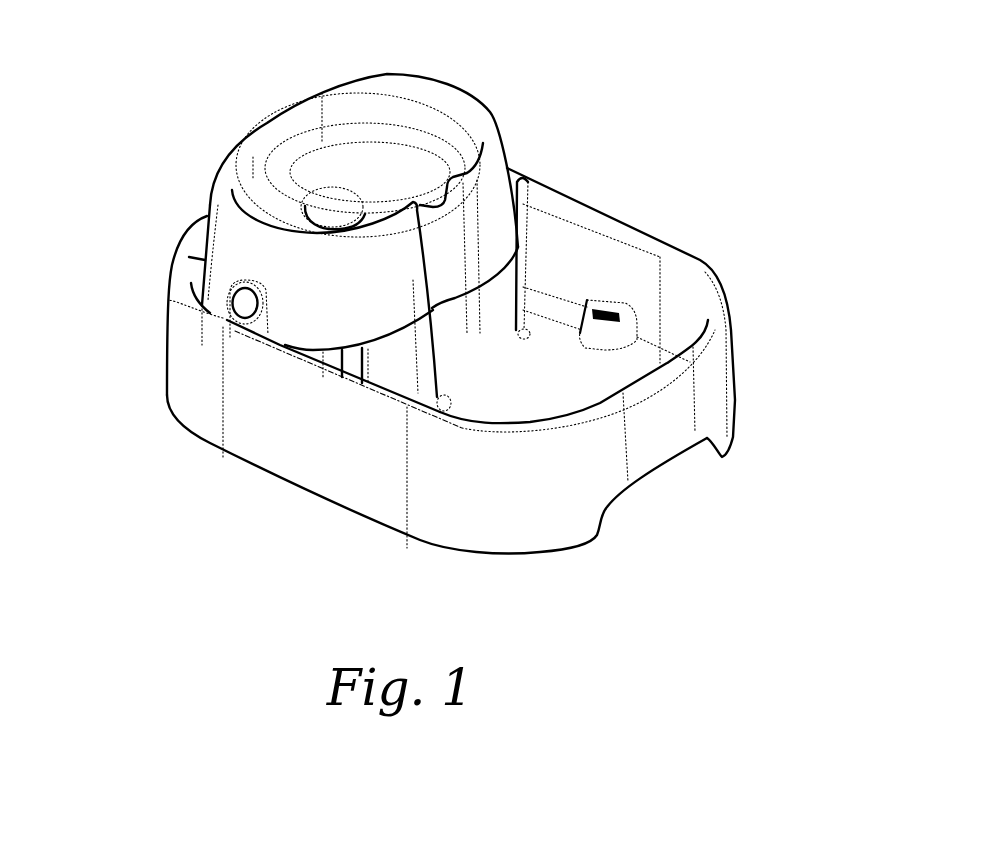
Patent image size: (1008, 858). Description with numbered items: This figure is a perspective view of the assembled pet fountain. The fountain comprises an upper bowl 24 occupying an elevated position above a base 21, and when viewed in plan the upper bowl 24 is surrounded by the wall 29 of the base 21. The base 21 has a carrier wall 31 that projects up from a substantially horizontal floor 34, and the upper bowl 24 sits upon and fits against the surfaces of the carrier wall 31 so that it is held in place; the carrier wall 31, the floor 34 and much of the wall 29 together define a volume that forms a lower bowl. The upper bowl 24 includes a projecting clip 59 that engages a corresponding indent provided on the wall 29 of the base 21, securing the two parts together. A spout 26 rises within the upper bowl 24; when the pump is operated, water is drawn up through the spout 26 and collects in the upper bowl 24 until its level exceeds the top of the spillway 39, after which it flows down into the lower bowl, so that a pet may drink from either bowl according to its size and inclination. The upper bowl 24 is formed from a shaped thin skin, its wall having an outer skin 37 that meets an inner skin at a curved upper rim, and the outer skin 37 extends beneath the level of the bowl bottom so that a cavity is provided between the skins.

The base 21 is at (687, 303).
The upper bowl 24 is at (497, 190).
The spout 26 is at (320, 207).
The wall 29 is at (293, 465).
The carrier wall 31 is at (392, 377).
The floor 34 is at (620, 377).
The outer skin 37 is at (213, 240).
The spillway 39 is at (462, 237).
The projecting clip 59 is at (227, 320).